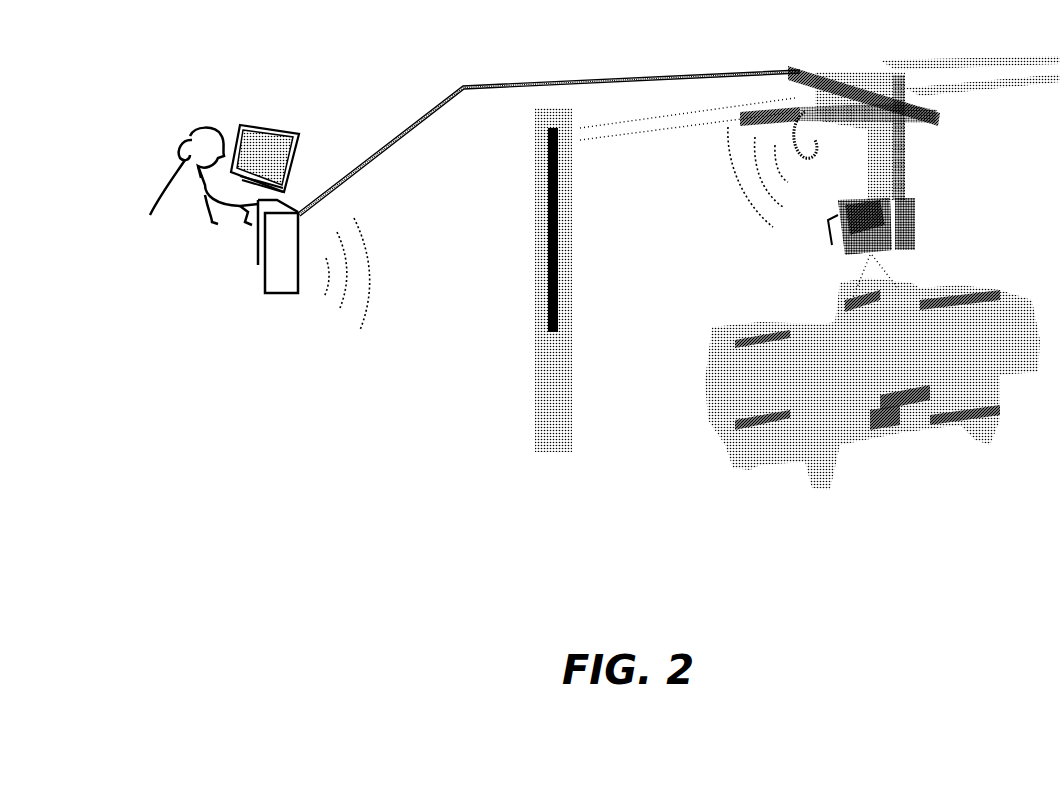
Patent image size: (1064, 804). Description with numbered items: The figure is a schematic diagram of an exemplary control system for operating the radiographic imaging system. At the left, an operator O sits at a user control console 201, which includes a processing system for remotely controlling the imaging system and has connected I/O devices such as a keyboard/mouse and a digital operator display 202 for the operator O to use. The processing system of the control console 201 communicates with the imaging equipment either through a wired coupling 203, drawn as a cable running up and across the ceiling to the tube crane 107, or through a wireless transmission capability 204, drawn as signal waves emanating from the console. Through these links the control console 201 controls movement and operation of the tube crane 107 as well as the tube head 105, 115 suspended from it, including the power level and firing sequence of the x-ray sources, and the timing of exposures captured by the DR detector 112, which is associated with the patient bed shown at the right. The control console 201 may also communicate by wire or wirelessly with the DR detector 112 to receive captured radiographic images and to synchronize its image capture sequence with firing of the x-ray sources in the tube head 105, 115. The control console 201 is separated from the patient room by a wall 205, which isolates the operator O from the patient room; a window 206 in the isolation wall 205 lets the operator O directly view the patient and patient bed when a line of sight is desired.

The operator O is at (198, 130).
The user control console 201 is at (262, 294).
The digital operator display 202 is at (255, 126).
The wired coupling 203 is at (432, 118).
The wireless transmission capability 204 is at (400, 272).
The wall 205 is at (535, 384).
The window 206 is at (558, 265).
The tube crane 107 is at (935, 137).
The tube head 105 is at (822, 256).
The tube head 115 is at (822, 256).
The DR detector 112 is at (915, 413).